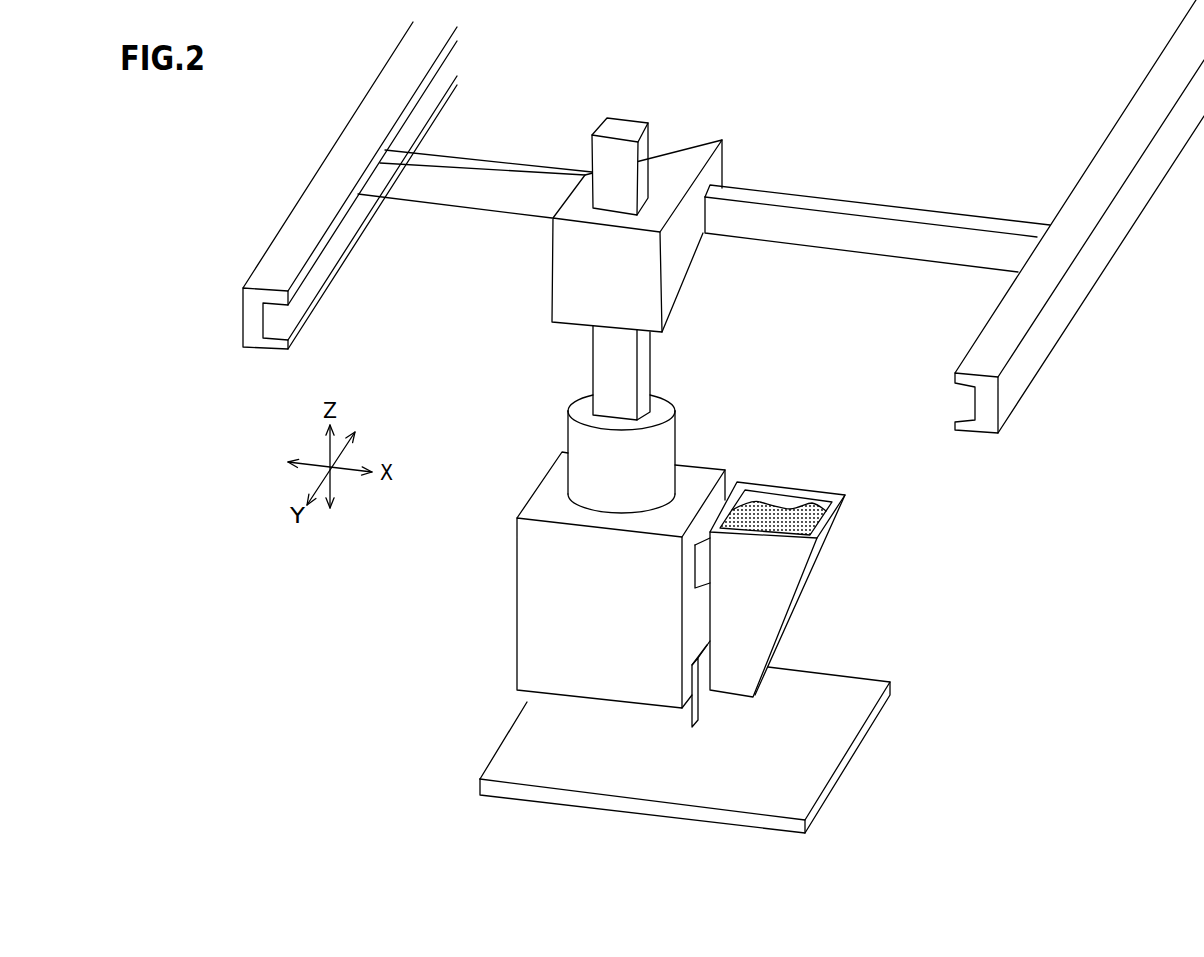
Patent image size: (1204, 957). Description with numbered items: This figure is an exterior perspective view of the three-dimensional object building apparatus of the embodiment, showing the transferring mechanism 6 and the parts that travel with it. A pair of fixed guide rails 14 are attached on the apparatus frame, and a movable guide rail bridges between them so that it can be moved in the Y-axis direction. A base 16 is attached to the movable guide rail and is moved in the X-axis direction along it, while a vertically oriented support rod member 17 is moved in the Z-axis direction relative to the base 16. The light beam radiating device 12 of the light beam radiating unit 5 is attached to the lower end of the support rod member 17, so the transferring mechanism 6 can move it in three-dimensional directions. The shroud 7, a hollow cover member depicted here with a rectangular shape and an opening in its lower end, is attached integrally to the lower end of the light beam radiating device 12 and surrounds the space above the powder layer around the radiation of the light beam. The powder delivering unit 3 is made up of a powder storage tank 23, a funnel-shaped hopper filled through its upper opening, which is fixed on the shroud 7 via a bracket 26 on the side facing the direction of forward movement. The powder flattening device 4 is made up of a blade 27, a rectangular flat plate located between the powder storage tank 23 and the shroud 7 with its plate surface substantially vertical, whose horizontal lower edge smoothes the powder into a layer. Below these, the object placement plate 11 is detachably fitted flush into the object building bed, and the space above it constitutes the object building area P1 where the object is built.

The fixed guide rails 14 is at (318, 194).
The transferring mechanism 6 is at (704, 218).
The base 16 is at (675, 268).
The support rod member 17 is at (613, 368).
The light beam radiating device 12 is at (660, 443).
The light beam radiating unit 5 is at (664, 454).
The shroud 7 is at (540, 594).
The powder storage tank 23 is at (785, 568).
The powder delivering unit 3 is at (813, 589).
The bracket 26 is at (700, 570).
The blade 27 is at (717, 709).
The powder flattening device 4 is at (792, 684).
The object placement plate 11 is at (797, 757).
The object building area P1 is at (593, 728).